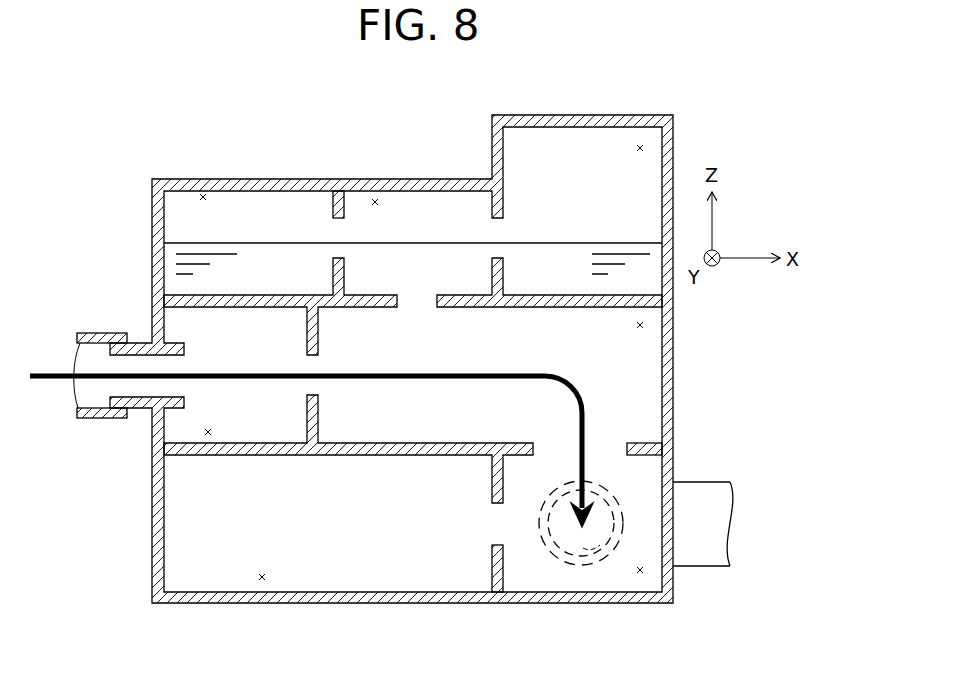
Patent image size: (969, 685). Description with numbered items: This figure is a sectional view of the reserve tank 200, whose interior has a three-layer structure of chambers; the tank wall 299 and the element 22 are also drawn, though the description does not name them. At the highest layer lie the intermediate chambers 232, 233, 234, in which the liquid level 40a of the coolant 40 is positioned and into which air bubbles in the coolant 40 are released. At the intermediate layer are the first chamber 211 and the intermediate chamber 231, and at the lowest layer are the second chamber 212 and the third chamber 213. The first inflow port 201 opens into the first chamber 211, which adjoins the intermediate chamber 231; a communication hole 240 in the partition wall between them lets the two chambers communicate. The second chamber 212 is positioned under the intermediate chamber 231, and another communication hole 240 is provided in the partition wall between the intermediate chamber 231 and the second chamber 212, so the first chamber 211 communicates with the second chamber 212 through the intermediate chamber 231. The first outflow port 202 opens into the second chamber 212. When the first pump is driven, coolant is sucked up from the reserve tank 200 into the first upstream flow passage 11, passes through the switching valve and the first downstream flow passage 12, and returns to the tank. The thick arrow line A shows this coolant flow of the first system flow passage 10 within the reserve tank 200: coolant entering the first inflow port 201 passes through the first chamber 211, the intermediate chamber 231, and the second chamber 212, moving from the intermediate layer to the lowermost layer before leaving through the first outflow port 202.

The reserve tank 200 is at (404, 370).
The housing 299 is at (152, 215).
The intermediate chamber 232 is at (203, 195).
The intermediate chamber 233 is at (375, 199).
The intermediate chamber 234 is at (643, 148).
The intermediate chamber 231 is at (643, 325).
The second chamber 212 is at (643, 570).
The first chamber 211 is at (205, 440).
The third chamber 213 is at (262, 580).
The communication hole 240 is at (333, 218).
The coolant 40 is at (402, 262).
The liquid level 40a is at (285, 243).
The first system flow passage 10 is at (351, 454).
The first downstream flow passage 12 is at (103, 333).
The first upstream flow passage 11 is at (572, 565).
The first inflow port 201 is at (145, 343).
The first outflow port 202 is at (600, 545).
The drain pipe 22 is at (713, 482).
The thick arrow line A is at (45, 385).